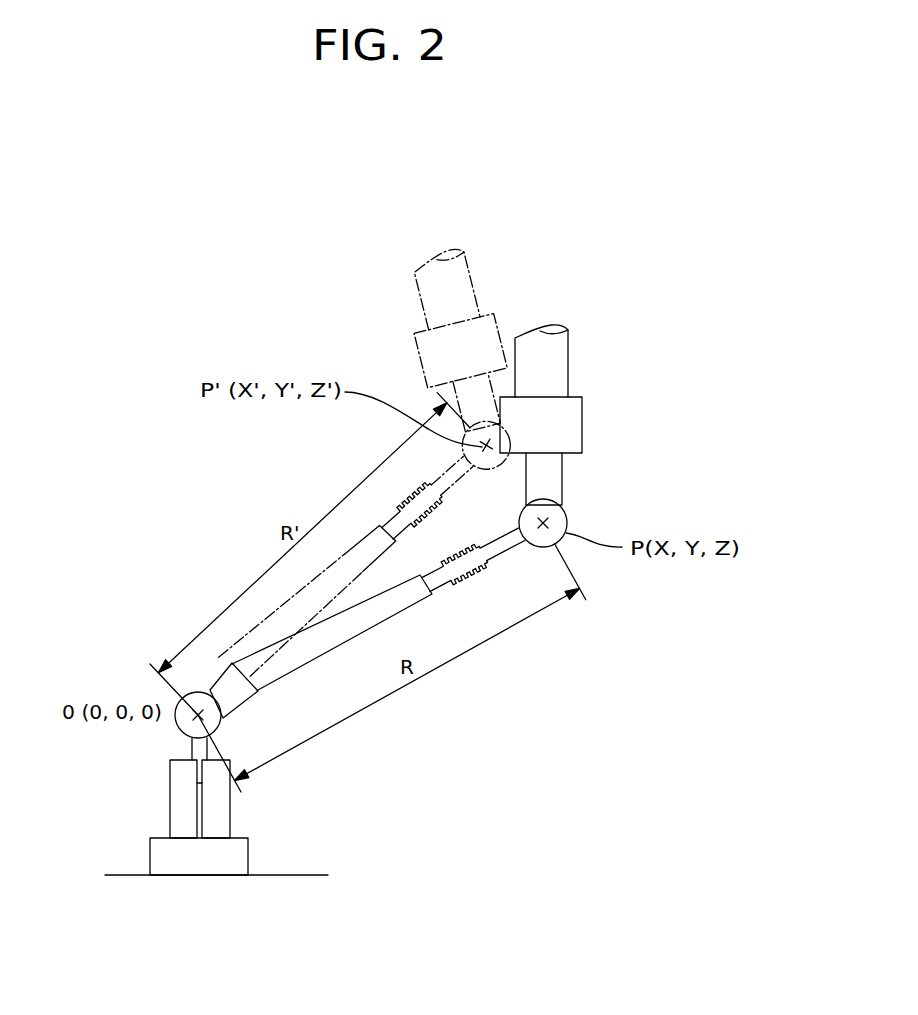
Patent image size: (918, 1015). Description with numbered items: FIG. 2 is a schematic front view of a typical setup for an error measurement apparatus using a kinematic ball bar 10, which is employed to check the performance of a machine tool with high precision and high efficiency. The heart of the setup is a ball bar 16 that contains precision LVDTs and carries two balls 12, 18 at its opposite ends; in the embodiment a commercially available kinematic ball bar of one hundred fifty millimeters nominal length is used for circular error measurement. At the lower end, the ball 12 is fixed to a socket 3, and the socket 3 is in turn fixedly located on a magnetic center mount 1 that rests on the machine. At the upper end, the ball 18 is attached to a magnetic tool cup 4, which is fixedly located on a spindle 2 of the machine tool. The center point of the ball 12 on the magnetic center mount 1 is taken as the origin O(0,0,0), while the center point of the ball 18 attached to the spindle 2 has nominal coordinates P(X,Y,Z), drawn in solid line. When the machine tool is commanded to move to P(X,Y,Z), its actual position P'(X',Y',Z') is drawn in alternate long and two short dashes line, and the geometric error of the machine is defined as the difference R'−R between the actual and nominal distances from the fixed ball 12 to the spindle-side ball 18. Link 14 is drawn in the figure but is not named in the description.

The magnetic center mount 1 is at (248, 850).
The spindle 2 is at (568, 356).
The socket 3 is at (170, 808).
The magnetic tool cup 4 is at (562, 473).
The kinematic ball bar 10 is at (390, 566).
The ball 12 is at (199, 692).
The first arm link 14 is at (257, 703).
The ball bar 16 is at (358, 637).
The ball 18 is at (545, 550).